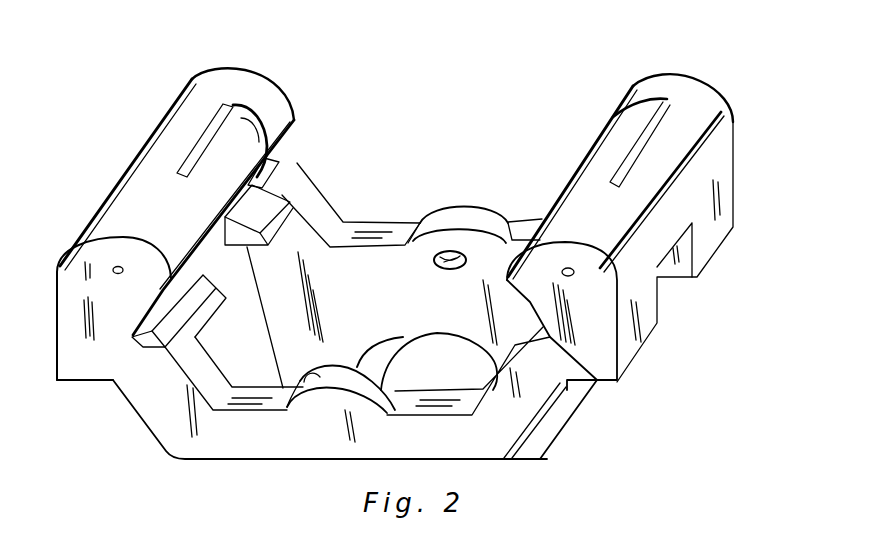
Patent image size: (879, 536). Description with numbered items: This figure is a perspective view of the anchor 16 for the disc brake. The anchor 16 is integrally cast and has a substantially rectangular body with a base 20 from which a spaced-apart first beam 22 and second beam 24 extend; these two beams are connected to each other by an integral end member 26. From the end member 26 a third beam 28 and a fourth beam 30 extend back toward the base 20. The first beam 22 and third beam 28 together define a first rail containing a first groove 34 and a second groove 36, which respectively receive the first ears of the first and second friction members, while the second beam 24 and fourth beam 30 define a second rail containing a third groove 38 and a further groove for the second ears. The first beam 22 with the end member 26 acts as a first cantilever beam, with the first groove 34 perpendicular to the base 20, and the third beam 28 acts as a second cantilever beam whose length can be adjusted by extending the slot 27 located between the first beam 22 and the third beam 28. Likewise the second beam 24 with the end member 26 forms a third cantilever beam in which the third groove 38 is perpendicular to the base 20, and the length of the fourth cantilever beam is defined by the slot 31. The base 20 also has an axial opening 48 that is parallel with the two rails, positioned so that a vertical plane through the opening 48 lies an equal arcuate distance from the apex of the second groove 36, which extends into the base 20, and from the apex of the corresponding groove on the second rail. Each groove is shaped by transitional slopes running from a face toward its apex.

The anchor 16 is at (680, 59).
The base 20 is at (370, 263).
The first beam 22 is at (140, 177).
The second beam 24 is at (662, 150).
The end member 26 is at (150, 393).
The slot 27 is at (197, 133).
The third beam 28 is at (237, 150).
The fourth beam 30 is at (633, 143).
The slot 31 is at (630, 142).
The first groove 34 is at (124, 346).
The second groove 36 is at (305, 201).
The third groove 38 is at (592, 386).
The axial opening 48 is at (448, 271).